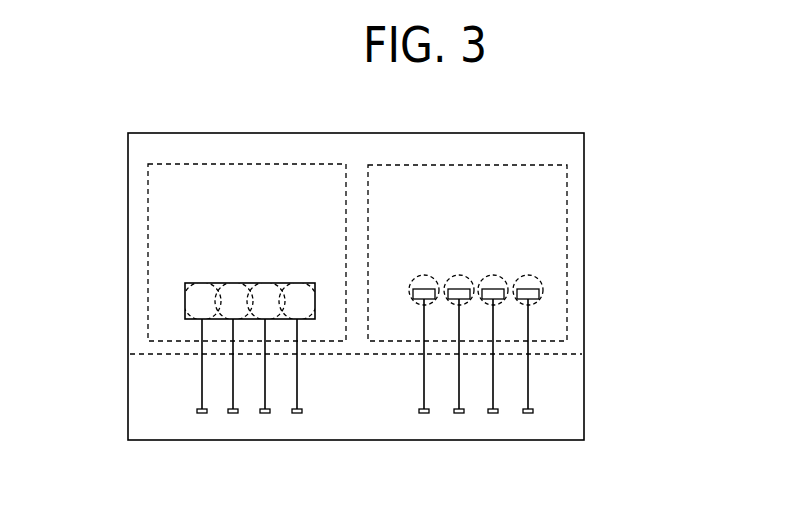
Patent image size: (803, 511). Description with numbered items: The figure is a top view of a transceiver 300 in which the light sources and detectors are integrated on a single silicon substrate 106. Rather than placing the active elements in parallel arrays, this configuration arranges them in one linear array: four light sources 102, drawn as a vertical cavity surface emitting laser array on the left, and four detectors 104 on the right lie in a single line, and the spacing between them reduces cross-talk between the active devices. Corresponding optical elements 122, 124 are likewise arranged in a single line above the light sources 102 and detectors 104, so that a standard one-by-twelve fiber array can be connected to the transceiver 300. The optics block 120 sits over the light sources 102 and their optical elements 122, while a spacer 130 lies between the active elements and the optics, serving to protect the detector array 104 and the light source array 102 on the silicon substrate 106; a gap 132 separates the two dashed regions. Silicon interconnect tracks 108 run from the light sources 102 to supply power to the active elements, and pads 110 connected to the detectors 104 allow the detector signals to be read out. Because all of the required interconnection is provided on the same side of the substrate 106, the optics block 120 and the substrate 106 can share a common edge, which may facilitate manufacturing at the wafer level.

The transceiver 300 is at (642, 171).
The silicon substrate 106 is at (584, 402).
The optics block 120 is at (223, 201).
The spacer 130 is at (480, 133).
The gap between regions 132 is at (358, 172).
The light sources 102 is at (185, 312).
The optical elements 122 is at (183, 286).
The silicon interconnect tracks 108 is at (202, 404).
The detectors 104 is at (540, 292).
The optical elements 124 is at (540, 283).
The pads 110 is at (423, 410).